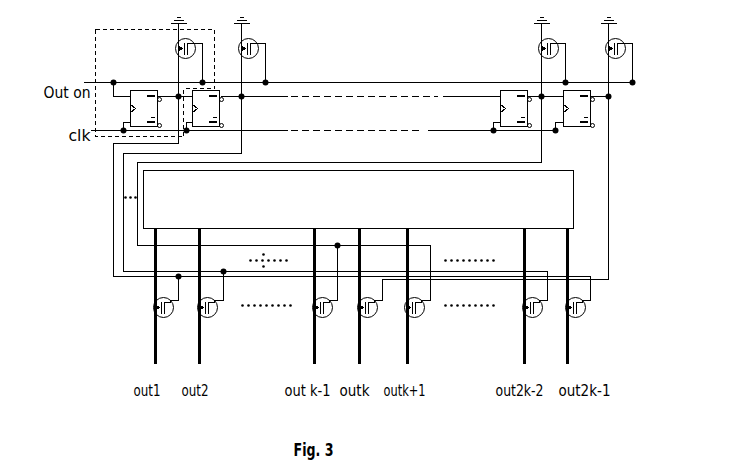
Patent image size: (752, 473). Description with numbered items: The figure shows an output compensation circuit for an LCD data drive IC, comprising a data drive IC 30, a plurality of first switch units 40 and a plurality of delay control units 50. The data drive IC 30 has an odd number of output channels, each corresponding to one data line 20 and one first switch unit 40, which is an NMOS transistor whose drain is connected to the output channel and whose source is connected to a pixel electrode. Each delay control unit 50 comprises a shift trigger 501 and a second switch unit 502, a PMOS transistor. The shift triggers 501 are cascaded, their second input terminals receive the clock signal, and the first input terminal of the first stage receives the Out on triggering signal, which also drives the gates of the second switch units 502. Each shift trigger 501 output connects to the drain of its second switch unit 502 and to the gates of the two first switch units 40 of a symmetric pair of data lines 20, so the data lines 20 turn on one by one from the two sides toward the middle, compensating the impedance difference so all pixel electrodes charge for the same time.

The delay control unit 50 is at (93, 47).
The second switch unit 502 is at (177, 46).
The shift trigger 501 is at (334, 142).
The data drive IC 30 is at (333, 209).
The data line 20 is at (154, 256).
The first switch unit 40 is at (152, 303).